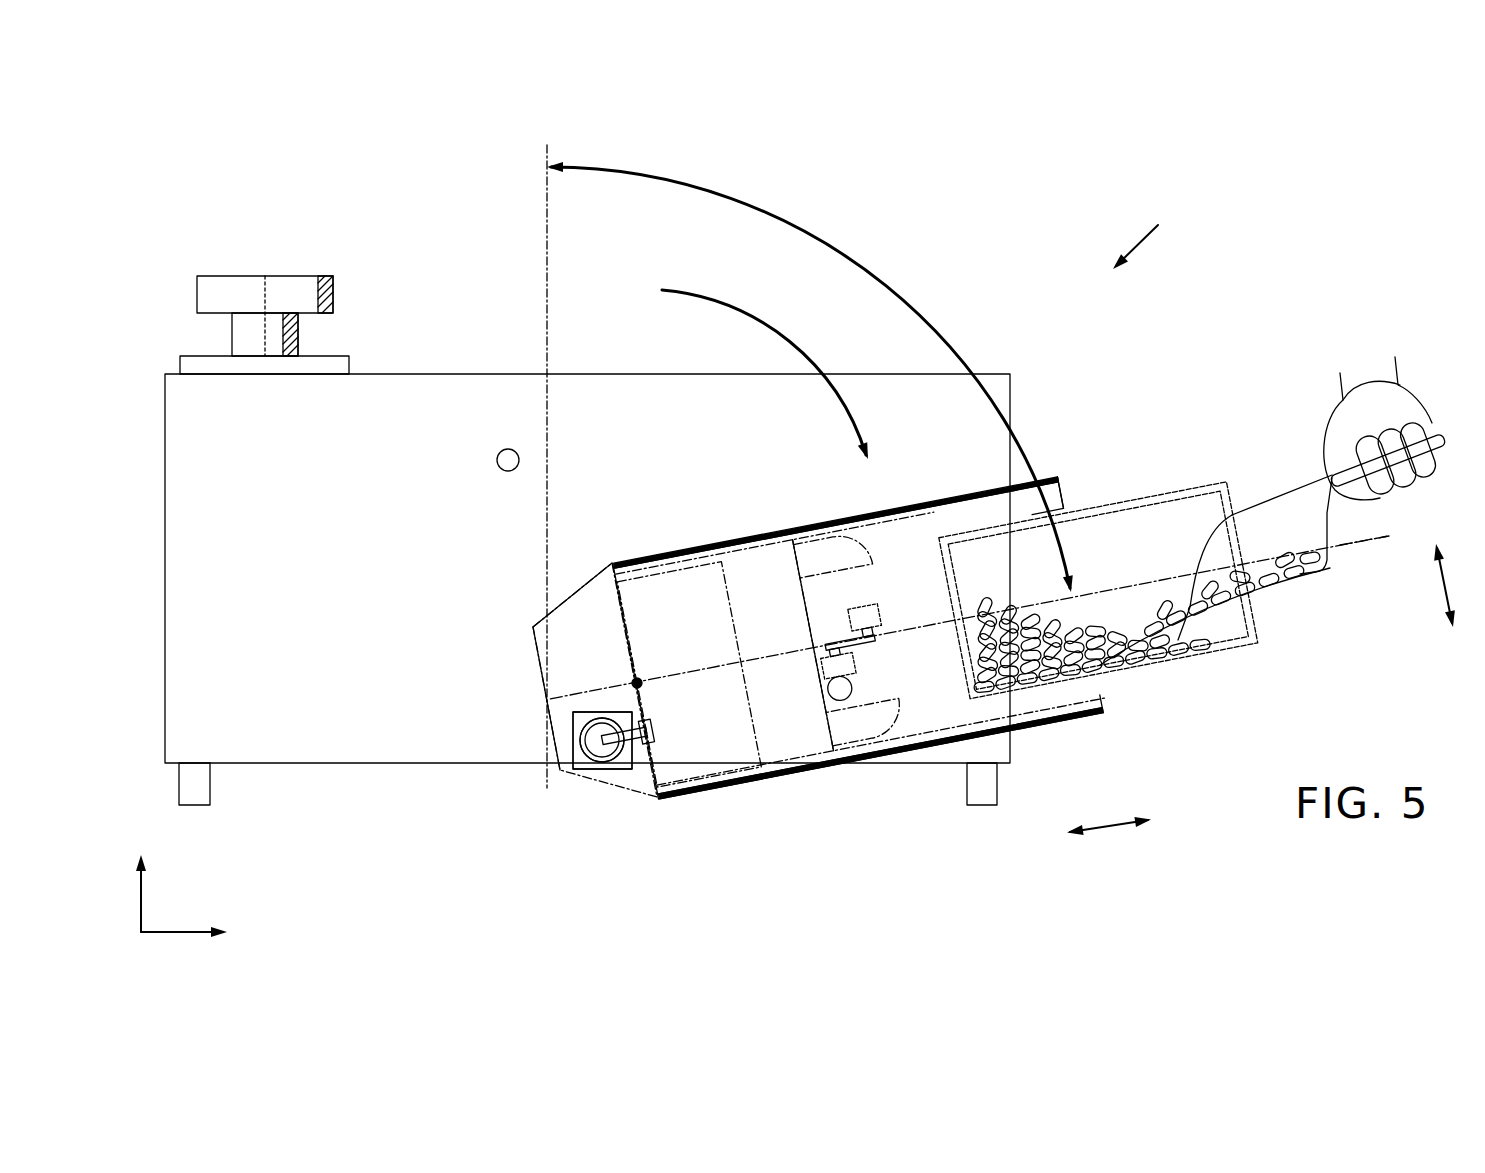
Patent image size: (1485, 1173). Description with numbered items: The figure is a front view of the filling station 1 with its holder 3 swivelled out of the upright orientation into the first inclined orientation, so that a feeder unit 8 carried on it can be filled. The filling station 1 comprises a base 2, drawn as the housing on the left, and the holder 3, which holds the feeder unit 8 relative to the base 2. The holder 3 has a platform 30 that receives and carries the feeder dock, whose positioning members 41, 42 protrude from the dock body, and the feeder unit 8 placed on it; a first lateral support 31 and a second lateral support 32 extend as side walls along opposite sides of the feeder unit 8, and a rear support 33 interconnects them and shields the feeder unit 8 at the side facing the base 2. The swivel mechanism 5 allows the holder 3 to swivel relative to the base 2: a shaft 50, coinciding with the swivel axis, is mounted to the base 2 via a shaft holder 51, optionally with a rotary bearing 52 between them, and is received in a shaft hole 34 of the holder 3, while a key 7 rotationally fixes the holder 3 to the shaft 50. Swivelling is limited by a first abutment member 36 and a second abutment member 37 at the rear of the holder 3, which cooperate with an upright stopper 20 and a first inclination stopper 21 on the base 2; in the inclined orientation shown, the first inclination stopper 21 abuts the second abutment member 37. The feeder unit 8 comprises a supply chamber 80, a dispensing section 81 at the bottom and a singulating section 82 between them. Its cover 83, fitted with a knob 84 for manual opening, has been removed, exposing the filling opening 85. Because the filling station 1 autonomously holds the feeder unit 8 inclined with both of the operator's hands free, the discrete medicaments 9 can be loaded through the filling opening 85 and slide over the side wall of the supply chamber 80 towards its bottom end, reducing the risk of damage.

The filling station 1 is at (1142, 233).
The base 2 is at (165, 548).
The holder 3 is at (542, 623).
The swivel mechanism 5 is at (625, 768).
The key 7 is at (660, 728).
The feeder unit 8 is at (983, 550).
The discrete medicaments 9 is at (1185, 632).
The upright stopper 20 is at (505, 458).
The first inclination stopper 21 is at (823, 687).
The platform 30 is at (576, 610).
The first lateral support 31 is at (962, 495).
The second lateral support 32 is at (1068, 723).
The rear support 33 is at (1048, 497).
The shaft hole 34 is at (563, 700).
The first abutment member 36 is at (883, 615).
The second abutment member 37 is at (818, 655).
The positioning member 41 is at (830, 545).
The positioning member 42 is at (862, 723).
The shaft 50 is at (581, 740).
The shaft holder 51 is at (577, 765).
The rotary bearing 52 is at (602, 770).
The supply chamber 80 is at (1222, 600).
The dispensing section 81 is at (745, 582).
The singulating section 82 is at (930, 683).
The cover 83 is at (335, 365).
The knob 84 is at (303, 284).
The filling opening 85 is at (1247, 613).